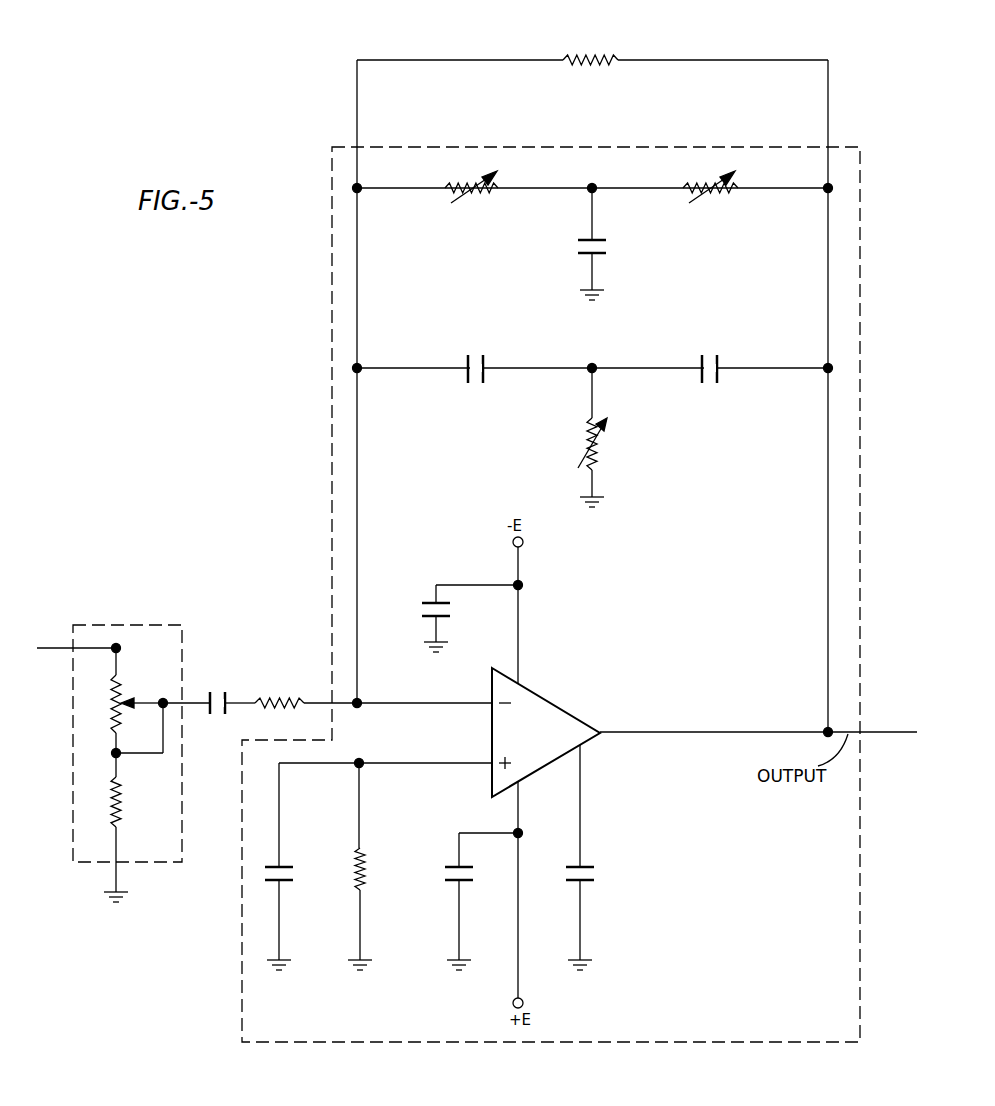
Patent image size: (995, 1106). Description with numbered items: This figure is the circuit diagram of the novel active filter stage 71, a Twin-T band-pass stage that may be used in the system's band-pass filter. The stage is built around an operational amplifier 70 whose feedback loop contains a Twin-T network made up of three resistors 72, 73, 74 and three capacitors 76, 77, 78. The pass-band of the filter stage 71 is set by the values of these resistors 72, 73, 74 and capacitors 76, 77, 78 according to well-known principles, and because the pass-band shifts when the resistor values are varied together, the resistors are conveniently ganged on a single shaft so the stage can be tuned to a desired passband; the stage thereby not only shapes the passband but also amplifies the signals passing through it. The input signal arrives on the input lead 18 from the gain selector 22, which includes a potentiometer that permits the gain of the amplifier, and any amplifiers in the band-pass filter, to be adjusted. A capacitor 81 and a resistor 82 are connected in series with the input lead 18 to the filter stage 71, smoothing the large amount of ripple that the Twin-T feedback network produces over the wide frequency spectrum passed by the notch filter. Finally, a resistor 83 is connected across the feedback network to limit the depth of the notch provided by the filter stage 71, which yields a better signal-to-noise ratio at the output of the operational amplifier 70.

The input lead 18 is at (50, 650).
The gain selector 22 is at (146, 623).
The operational amplifier 70 is at (559, 705).
The active filter stage 71 is at (331, 437).
The resistor 72 is at (473, 197).
The resistor 73 is at (718, 197).
The resistor 74 is at (589, 445).
The capacitor 76 is at (584, 239).
The capacitor 77 is at (488, 362).
The capacitor 78 is at (721, 362).
The capacitor 81 is at (209, 697).
The resistor 82 is at (282, 698).
The resistor 83 is at (601, 57).